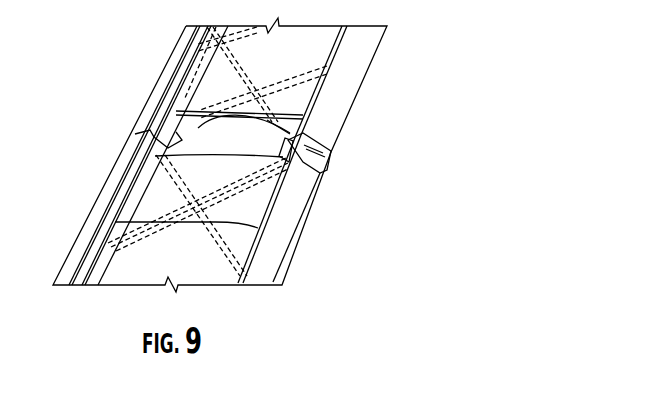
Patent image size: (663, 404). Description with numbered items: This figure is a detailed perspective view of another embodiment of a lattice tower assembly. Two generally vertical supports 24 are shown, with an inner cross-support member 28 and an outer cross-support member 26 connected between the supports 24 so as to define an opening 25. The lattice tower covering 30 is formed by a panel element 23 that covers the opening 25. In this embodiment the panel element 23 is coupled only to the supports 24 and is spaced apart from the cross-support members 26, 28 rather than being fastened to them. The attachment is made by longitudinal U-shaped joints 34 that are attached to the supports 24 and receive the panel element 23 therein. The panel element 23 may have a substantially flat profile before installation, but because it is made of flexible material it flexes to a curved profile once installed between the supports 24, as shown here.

The panel element 23 is at (247, 210).
The support 24 is at (110, 192).
The opening 25 is at (200, 138).
The outer cross-support member 26 is at (187, 132).
The inner cross-support member 28 is at (298, 126).
The lattice tower covering 30 is at (114, 243).
The joint 34 is at (178, 132).